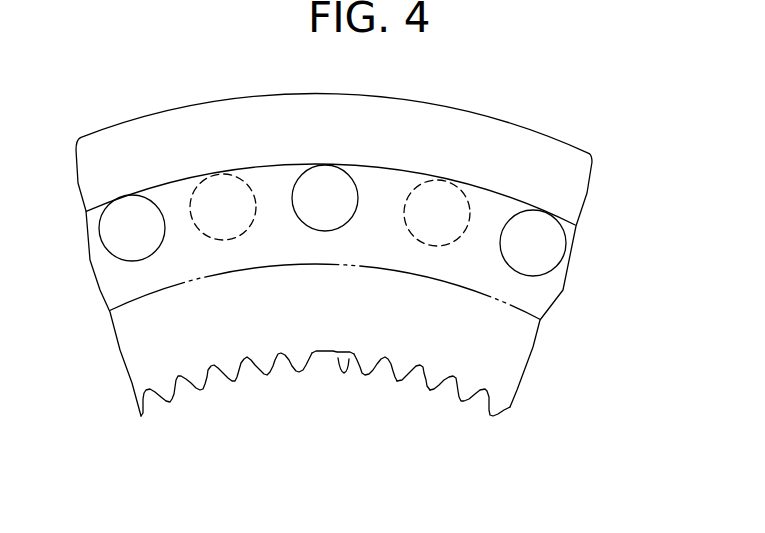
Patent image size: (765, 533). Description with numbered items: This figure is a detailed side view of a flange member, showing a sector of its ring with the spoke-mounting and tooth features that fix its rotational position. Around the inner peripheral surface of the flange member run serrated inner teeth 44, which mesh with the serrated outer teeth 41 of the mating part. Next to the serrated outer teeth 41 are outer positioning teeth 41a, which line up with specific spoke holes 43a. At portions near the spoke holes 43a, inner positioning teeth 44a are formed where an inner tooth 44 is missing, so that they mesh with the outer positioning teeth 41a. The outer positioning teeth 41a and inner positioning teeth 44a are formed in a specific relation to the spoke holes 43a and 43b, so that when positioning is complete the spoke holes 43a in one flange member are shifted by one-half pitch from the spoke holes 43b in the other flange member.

The serrated outer teeth 41 is at (420, 386).
The outer positioning teeth 41a is at (328, 368).
The spoke holes 43a is at (348, 161).
The spoke holes 43b is at (467, 178).
The serrated inner teeth 44 is at (338, 277).
The inner positioning teeth 44a is at (348, 355).